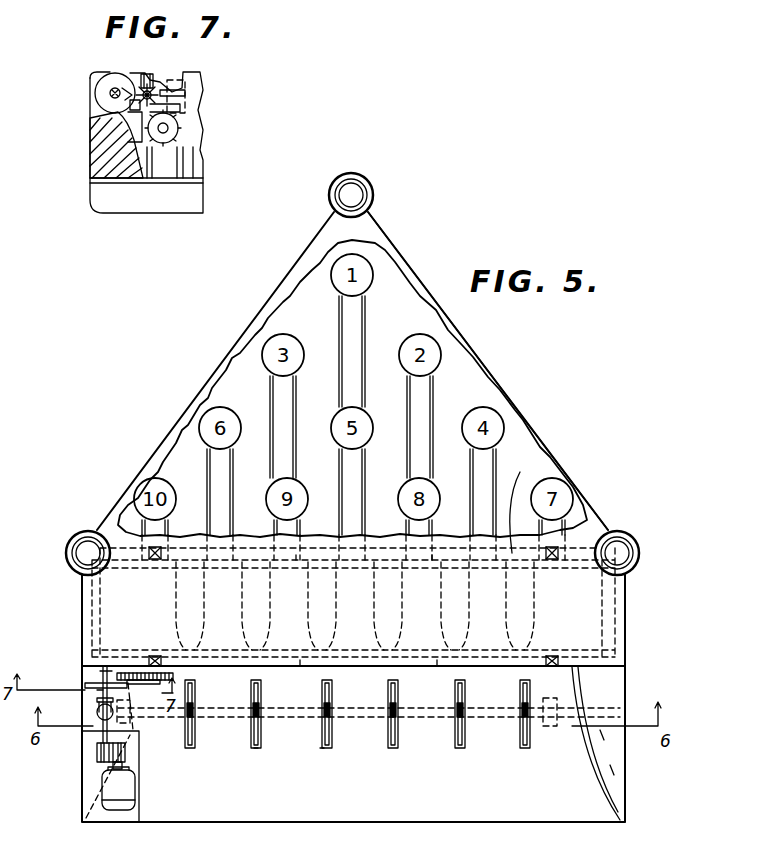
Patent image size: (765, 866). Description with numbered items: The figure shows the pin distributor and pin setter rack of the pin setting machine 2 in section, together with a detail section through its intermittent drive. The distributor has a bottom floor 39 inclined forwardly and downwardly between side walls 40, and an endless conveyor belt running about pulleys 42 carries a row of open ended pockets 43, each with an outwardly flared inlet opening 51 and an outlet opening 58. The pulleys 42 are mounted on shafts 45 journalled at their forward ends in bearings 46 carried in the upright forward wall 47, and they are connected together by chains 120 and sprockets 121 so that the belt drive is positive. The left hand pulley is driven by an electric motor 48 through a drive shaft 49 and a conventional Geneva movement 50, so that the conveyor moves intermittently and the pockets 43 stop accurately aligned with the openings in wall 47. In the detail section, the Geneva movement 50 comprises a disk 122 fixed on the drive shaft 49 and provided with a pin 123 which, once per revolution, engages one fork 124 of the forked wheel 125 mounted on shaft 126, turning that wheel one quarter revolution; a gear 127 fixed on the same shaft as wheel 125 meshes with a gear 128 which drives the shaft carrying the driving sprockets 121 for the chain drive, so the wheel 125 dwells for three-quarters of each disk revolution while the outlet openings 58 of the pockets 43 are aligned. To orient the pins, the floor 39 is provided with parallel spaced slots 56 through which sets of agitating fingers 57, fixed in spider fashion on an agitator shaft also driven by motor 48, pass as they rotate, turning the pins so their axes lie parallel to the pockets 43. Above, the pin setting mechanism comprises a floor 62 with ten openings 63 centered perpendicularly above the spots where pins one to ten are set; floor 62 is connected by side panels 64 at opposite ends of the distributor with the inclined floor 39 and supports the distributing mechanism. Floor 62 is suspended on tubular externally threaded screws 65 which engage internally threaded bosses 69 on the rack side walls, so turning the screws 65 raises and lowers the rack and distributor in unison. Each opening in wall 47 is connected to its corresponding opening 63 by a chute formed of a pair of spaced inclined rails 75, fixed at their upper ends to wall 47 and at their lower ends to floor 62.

In FIG. 5, the pinsetter apparatus 2 is at (97, 690).
In FIG. 5, the bottom floor 39 is at (292, 812).
In FIG. 5, the side walls 40 is at (614, 785).
In FIG. 7, the pulleys 42 is at (168, 128).
In FIG. 7, the pockets 43 is at (197, 163).
In FIG. 7, the shafts 45 is at (172, 114).
In FIG. 5, the shafts 45 is at (153, 603).
In FIG. 5, the bearings 46 is at (150, 550).
In FIG. 5, the upright forward wall 47 is at (522, 504).
In FIG. 5, the electric motor 48 is at (102, 790).
In FIG. 7, the drive shaft 49 is at (112, 92).
In FIG. 5, the drive shaft 49 is at (98, 693).
In FIG. 7, the Geneva movement 50 is at (128, 117).
In FIG. 5, the Geneva movement 50 is at (148, 688).
In FIG. 5, the flared inlet openings 51 is at (437, 660).
In FIG. 5, the slots 56 is at (256, 750).
In FIG. 5, the agitating fingers 57 is at (195, 733).
In FIG. 5, the outlet openings 58 is at (296, 555).
In FIG. 5, the floor 62 is at (468, 358).
In FIG. 5, the openings 63 is at (365, 270).
In FIG. 5, the side panels 64 is at (82, 585).
In FIG. 5, the screws 65 is at (365, 180).
In FIG. 5, the bosses 69 is at (377, 198).
In FIG. 5, the inclined rails 75 is at (296, 410).
In FIG. 5, the chains 120 is at (300, 660).
In FIG. 5, the sprockets 121 is at (167, 650).
In FIG. 7, the disk 122 is at (128, 88).
In FIG. 7, the pin 123 is at (130, 73).
In FIG. 7, the fork 124 is at (148, 72).
In FIG. 7, the forked wheel 125 is at (185, 77).
In FIG. 5, the forked wheel 125 is at (100, 682).
In FIG. 7, the shaft 126 is at (135, 97).
In FIG. 7, the gear 127 is at (187, 75).
In FIG. 5, the gear 127 is at (100, 670).
In FIG. 7, the gear 128 is at (185, 108).
In FIG. 5, the gear 128 is at (173, 676).